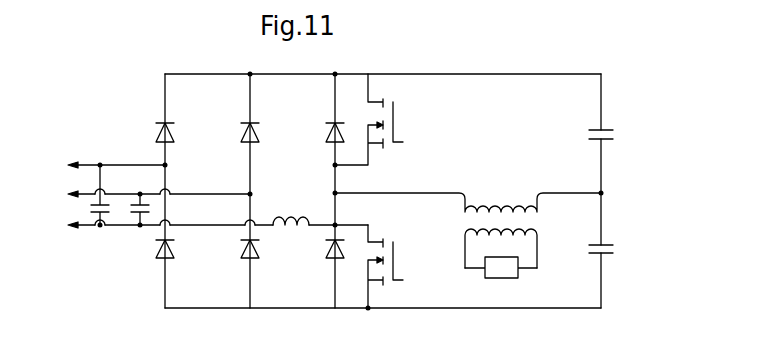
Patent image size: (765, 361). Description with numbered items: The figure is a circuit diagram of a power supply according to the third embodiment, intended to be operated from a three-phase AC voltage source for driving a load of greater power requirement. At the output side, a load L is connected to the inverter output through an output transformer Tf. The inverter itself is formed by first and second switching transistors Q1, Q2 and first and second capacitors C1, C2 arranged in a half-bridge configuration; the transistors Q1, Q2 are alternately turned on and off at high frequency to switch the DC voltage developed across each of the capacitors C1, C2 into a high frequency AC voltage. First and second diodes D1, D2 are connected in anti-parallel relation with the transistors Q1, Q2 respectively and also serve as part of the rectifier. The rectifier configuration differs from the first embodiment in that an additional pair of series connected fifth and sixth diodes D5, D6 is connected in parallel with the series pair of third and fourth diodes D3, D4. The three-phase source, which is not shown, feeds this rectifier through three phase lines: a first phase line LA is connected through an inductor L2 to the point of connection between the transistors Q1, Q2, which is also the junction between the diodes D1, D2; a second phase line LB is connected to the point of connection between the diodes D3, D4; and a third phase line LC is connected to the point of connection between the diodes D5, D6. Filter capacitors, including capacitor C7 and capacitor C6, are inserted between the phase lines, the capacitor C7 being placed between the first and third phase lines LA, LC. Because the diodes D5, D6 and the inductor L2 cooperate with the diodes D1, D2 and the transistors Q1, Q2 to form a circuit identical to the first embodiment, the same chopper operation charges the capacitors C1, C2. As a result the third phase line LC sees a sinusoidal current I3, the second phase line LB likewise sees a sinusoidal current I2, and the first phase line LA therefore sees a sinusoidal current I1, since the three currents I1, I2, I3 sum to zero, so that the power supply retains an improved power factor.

The sinusoidal current I1 is at (204, 224).
The sinusoidal current I2 is at (145, 194).
The sinusoidal current I3 is at (102, 165).
The first phase line LA is at (113, 228).
The second phase line LB is at (115, 193).
The third phase line LC is at (129, 165).
The filter capacitor C7 is at (98, 215).
The capacitor C6 is at (138, 228).
The inductor L2 is at (291, 201).
The first diode D1 is at (319, 138).
The second diode D2 is at (319, 265).
The third diode D3 is at (265, 125).
The fourth diode D4 is at (266, 249).
The fifth diode D5 is at (180, 125).
The sixth diode D6 is at (182, 258).
The first switching transistor Q1 is at (370, 126).
The second switching transistor Q2 is at (386, 257).
The output transformer Tf is at (468, 230).
The load L is at (518, 272).
The first capacitor C1 is at (615, 143).
The second capacitor C2 is at (618, 253).